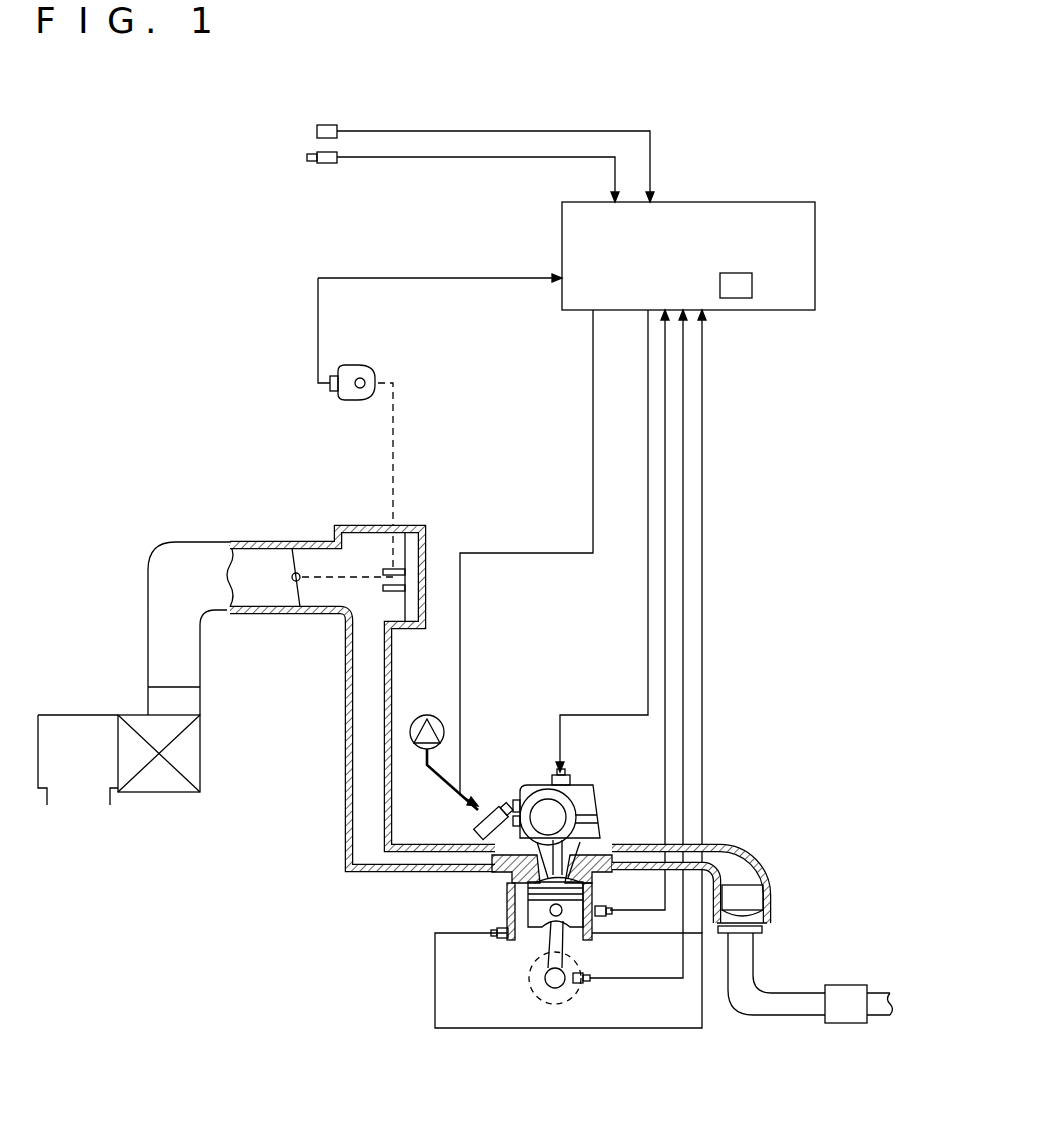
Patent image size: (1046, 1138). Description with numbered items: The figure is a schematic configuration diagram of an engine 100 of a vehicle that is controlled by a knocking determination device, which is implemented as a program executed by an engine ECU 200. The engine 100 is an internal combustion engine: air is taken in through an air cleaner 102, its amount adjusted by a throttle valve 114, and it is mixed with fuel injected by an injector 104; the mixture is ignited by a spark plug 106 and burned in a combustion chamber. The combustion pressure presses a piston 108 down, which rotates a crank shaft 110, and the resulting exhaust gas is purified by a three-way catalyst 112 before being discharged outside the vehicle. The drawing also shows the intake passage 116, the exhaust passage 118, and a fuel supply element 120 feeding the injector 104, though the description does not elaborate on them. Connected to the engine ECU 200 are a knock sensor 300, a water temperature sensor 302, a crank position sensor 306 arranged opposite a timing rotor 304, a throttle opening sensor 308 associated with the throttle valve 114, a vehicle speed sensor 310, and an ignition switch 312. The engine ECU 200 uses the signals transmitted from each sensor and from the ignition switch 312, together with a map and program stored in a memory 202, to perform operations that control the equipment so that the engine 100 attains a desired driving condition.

The engine 100 is at (470, 899).
The air cleaner 102 is at (158, 793).
The injector 104 is at (485, 808).
The spark plug 106 is at (567, 773).
The piston 108 is at (540, 927).
The crank shaft 110 is at (542, 997).
The three-way catalyst 112 is at (745, 883).
The throttle valve 114 is at (287, 612).
The intake manifold 116 is at (445, 846).
The exhaust manifold 118 is at (613, 846).
The fuel pump 120 is at (428, 716).
The engine ECU 200 is at (760, 202).
The memory 202 is at (742, 298).
The knock sensor 300 is at (497, 937).
The water temperature sensor 302 is at (610, 917).
The timing rotor 304 is at (563, 990).
The crank position sensor 306 is at (590, 985).
The throttle opening sensor 308 is at (373, 365).
The vehicle speed sensor 310 is at (330, 125).
The ignition switch 312 is at (332, 165).